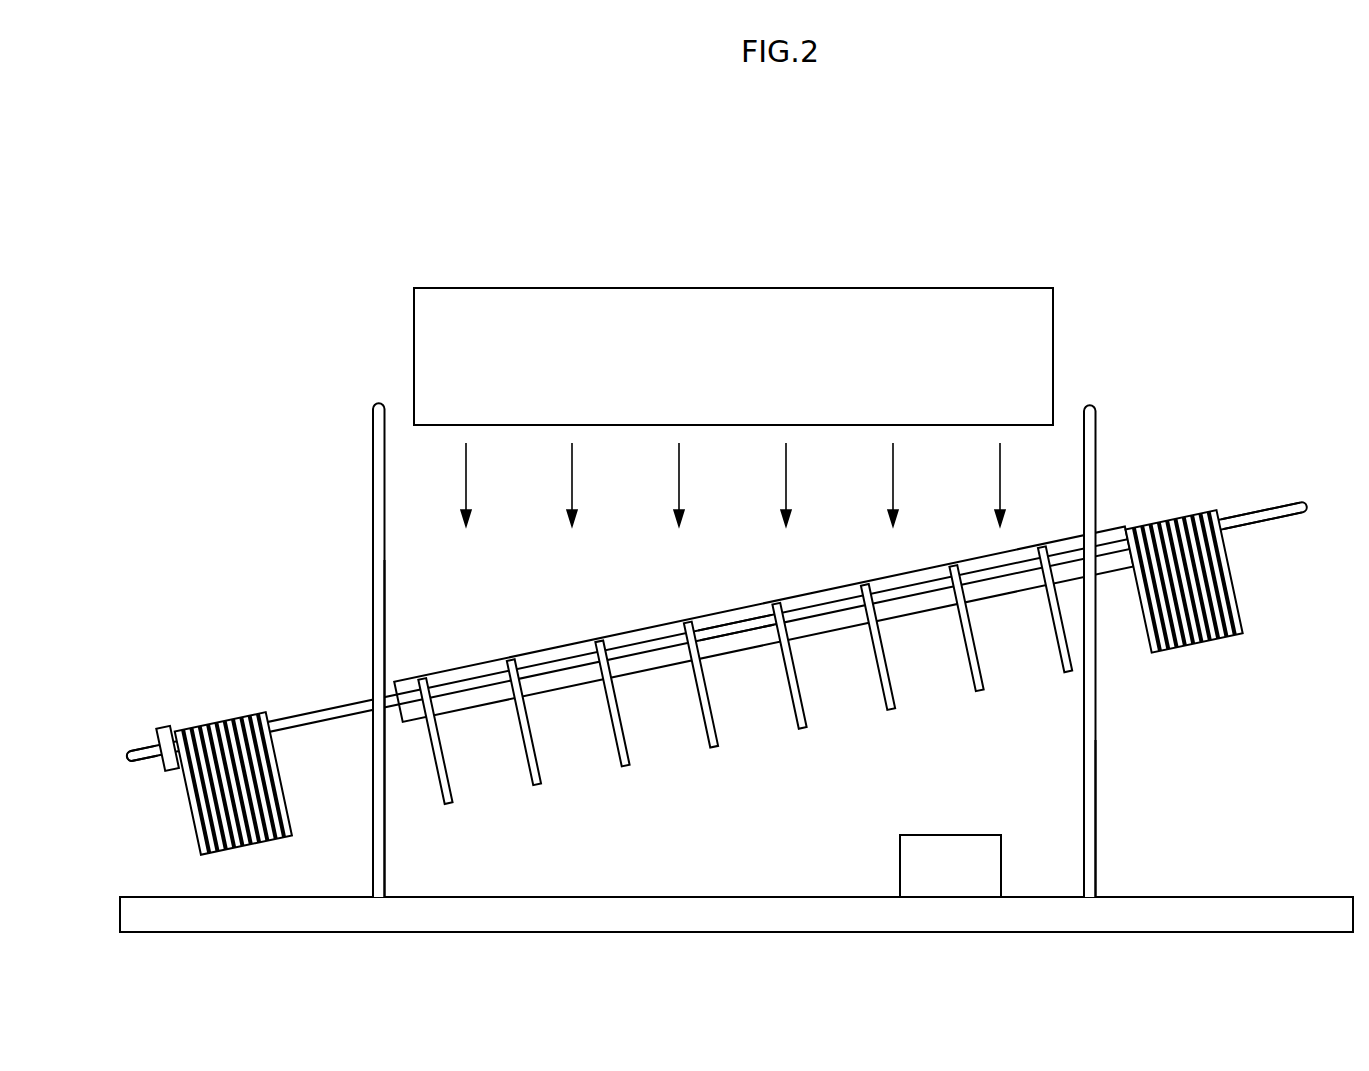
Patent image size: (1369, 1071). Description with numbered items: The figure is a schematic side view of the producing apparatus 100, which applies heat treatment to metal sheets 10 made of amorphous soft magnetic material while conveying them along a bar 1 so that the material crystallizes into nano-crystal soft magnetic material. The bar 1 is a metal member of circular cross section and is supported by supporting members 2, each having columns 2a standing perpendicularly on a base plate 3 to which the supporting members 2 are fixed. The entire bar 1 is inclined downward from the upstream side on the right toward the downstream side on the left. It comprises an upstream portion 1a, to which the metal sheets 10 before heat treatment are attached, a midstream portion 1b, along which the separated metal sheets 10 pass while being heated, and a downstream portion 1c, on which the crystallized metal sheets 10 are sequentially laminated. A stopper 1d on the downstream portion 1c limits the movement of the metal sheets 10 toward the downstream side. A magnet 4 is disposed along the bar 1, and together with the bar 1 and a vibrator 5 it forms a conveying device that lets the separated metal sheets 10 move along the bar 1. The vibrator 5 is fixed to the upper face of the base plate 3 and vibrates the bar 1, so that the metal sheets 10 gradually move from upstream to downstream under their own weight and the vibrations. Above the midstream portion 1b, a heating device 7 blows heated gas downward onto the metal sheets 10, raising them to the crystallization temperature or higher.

The bar 1 is at (1305, 500).
The upstream portion 1a is at (1250, 514).
The midstream portion 1b is at (733, 630).
The downstream portion 1c is at (131, 752).
The stopper 1d is at (166, 729).
The supporting member 2 is at (374, 437).
The column 2a is at (373, 570).
The base plate 3 is at (1278, 903).
The magnet 4 is at (829, 598).
The vibrator 5 is at (951, 849).
The heating device 7 is at (1030, 337).
The metal sheet 10 is at (1232, 592).
The producing apparatus 100 is at (1198, 338).